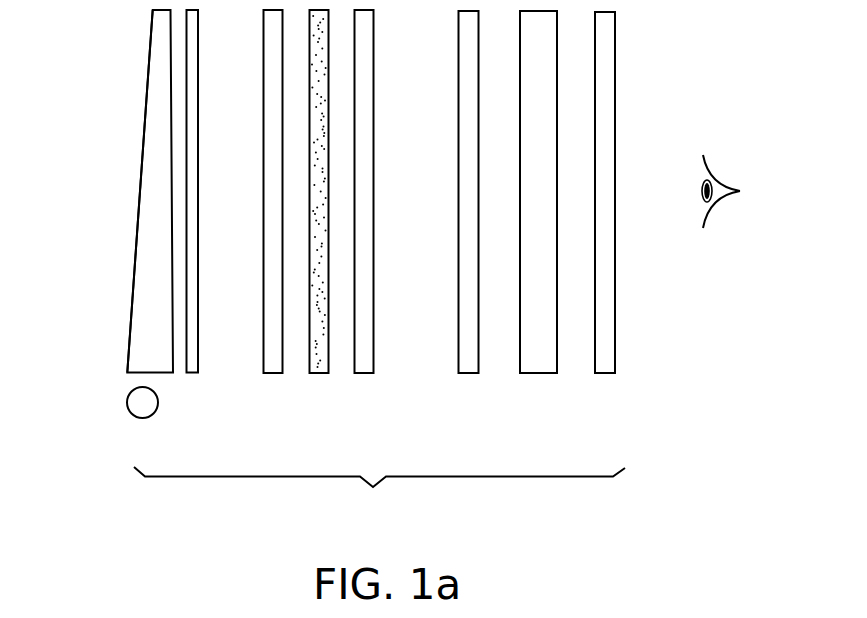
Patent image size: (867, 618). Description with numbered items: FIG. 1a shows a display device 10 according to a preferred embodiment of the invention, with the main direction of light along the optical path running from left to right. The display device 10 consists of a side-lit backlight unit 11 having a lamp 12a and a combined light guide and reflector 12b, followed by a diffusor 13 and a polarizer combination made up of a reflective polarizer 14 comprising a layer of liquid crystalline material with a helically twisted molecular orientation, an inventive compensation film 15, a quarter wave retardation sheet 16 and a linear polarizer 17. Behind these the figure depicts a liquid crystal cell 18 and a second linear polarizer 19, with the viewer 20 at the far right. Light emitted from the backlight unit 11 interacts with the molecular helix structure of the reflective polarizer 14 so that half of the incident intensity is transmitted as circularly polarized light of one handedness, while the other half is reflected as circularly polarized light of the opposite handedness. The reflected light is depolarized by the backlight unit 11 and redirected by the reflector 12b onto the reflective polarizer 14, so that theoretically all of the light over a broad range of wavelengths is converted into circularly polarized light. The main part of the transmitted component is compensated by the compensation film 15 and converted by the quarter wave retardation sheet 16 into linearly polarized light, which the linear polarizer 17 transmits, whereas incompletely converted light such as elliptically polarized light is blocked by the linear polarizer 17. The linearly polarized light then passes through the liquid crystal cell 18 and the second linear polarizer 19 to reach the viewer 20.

The display device 10 is at (379, 496).
The side-lit backlight unit 11 is at (150, 235).
The lamp 12a is at (124, 398).
The combined light guide and reflector 12b is at (137, 117).
The diffusor 13 is at (202, 235).
The reflective polarizer 14 is at (265, 235).
The compensation film 15 is at (322, 235).
The quarter wave retardation sheet 16 is at (372, 235).
The linear polarizer 17 is at (472, 236).
The liquid crystal cell 18 is at (542, 236).
The second linear polarizer 19 is at (605, 236).
The viewer 20 is at (722, 308).